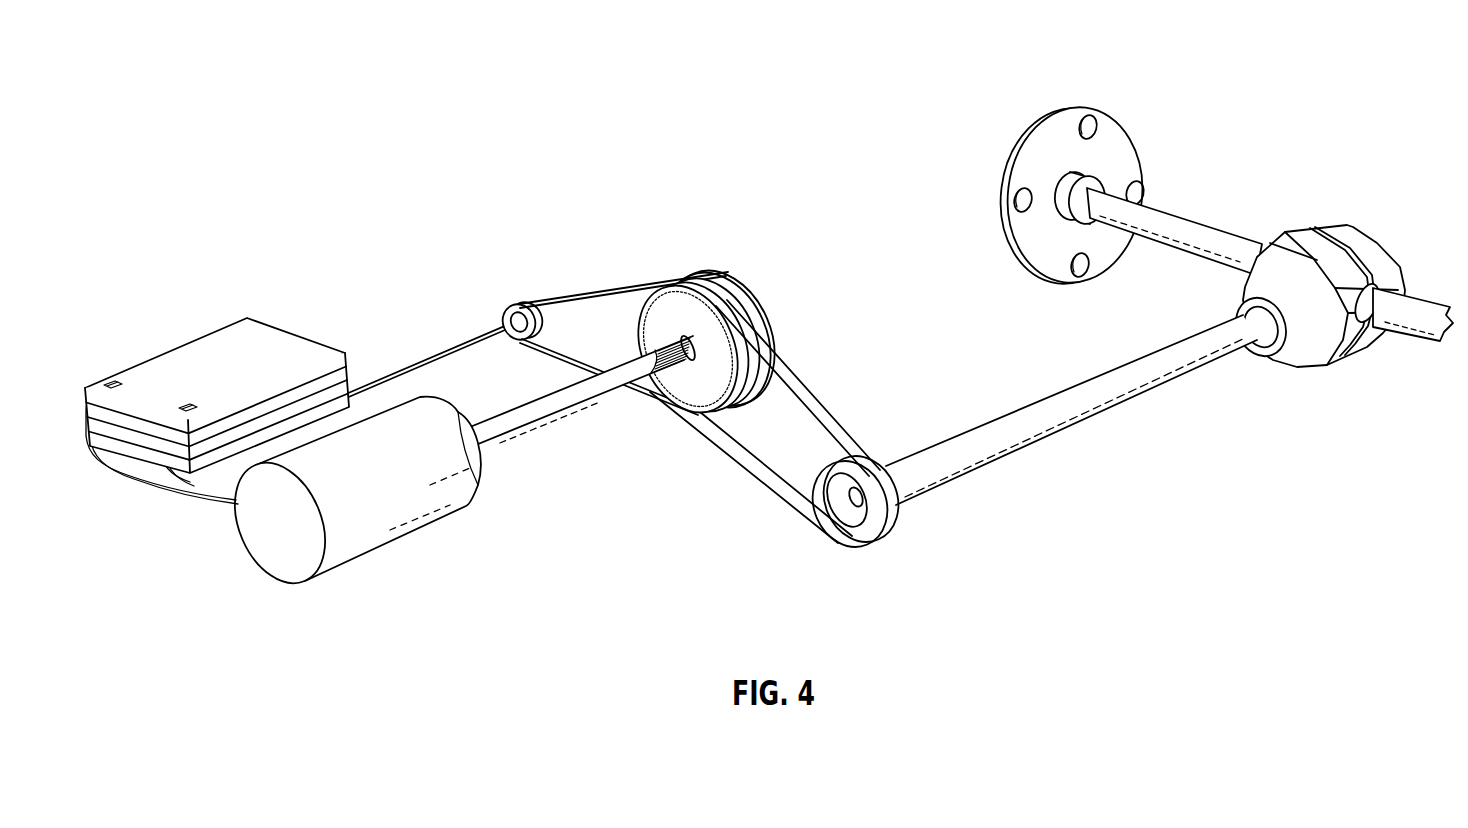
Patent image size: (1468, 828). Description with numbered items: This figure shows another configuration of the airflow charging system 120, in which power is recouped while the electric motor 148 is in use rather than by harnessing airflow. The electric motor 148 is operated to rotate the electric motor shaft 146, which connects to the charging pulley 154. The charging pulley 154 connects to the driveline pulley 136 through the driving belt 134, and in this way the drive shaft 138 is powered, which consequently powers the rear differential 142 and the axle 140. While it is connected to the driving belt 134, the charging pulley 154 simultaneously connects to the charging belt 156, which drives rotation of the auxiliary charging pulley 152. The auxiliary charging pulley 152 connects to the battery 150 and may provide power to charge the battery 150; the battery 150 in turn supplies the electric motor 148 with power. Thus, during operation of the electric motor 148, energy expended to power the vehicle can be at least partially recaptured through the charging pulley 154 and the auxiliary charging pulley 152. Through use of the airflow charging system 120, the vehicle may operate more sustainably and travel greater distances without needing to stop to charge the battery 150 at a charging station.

The airflow charging system 120 is at (1214, 75).
The driving belt 134 is at (795, 373).
The driveline pulley 136 is at (878, 534).
The drive shaft 138 is at (1130, 400).
The axle 140 is at (1175, 209).
The rear differential 142 is at (1353, 228).
The electric motor shaft 146 is at (573, 417).
The electric motor 148 is at (355, 545).
The battery 150 is at (218, 340).
The auxiliary charging pulley 152 is at (516, 303).
The charging pulley 154 is at (710, 272).
The charging belt 156 is at (605, 283).